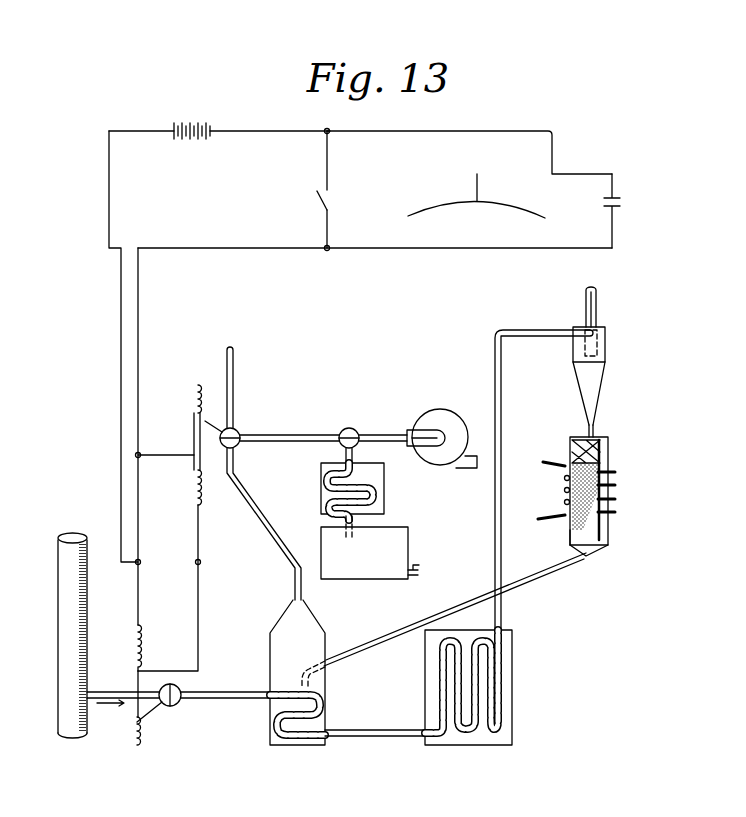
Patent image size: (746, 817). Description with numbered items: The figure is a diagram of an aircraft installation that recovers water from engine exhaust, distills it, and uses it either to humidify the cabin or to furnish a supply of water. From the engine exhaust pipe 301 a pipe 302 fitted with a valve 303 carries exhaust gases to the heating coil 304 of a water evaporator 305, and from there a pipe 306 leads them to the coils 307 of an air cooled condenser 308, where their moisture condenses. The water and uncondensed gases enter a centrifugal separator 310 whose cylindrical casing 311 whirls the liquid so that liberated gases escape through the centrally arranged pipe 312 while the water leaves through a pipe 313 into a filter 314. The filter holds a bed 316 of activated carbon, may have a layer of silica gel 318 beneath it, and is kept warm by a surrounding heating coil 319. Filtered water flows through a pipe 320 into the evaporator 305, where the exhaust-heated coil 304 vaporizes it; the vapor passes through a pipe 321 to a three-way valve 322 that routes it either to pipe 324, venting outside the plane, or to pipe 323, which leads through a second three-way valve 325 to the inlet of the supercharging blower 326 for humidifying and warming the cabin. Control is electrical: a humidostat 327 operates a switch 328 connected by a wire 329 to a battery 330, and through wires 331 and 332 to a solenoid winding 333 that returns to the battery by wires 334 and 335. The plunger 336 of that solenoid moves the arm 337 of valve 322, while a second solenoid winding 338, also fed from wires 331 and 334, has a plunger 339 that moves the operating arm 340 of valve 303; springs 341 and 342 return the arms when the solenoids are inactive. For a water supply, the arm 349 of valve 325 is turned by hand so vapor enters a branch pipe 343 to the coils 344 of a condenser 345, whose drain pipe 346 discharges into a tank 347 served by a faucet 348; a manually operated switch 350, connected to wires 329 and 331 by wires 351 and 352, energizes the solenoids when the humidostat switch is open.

The exhaust pipe 301 is at (58, 648).
The pipe 302 is at (128, 691).
The valve 303 is at (182, 688).
The heating coil 304 is at (322, 712).
The water evaporator 305 is at (327, 678).
The pipe 306 is at (408, 738).
The condenser coils 307 is at (500, 679).
The air cooled condenser 308 is at (513, 721).
The separator 310 is at (603, 381).
The cylindrical casing 311 is at (606, 342).
The centrally arranged pipe 312 is at (598, 307).
The pipe 313 is at (594, 428).
The filter 314 is at (610, 462).
The bed of activated carbon 316 is at (565, 497).
The layer of silica gel 318 is at (568, 535).
The heating coil 319 is at (612, 498).
The pipe 320 is at (536, 580).
The pipe 321 is at (294, 579).
The three-way valve 322 is at (239, 431).
The pipe 323 is at (303, 444).
The pipe 324 is at (234, 364).
The three-way valve 325 is at (349, 428).
The supercharging blower 326 is at (456, 410).
The humidostat 327 is at (450, 201).
The switch 328 is at (616, 197).
The wire 329 is at (545, 130).
The battery 330 is at (204, 124).
The wire 331 is at (505, 248).
The wire 332 is at (191, 454).
The solenoid winding 333 is at (193, 500).
The wire 334 is at (199, 544).
The wire 335 is at (121, 382).
The plunger 336 is at (195, 423).
The valve arm 337 is at (205, 421).
The second solenoid winding 338 is at (137, 625).
The plunger 339 is at (495, 502).
The operating arm 340 is at (155, 713).
The spring 341 is at (196, 389).
The spring 342 is at (133, 743).
The branch pipe 343 is at (353, 459).
The condenser coils 344 is at (322, 492).
The condenser 345 is at (385, 498).
The drain pipe 346 is at (345, 521).
The tank 347 is at (410, 549).
The faucet 348 is at (420, 572).
The valve arm 349 is at (358, 431).
The manually operated switch 350 is at (318, 196).
The wire 351 is at (327, 161).
The wire 352 is at (327, 219).